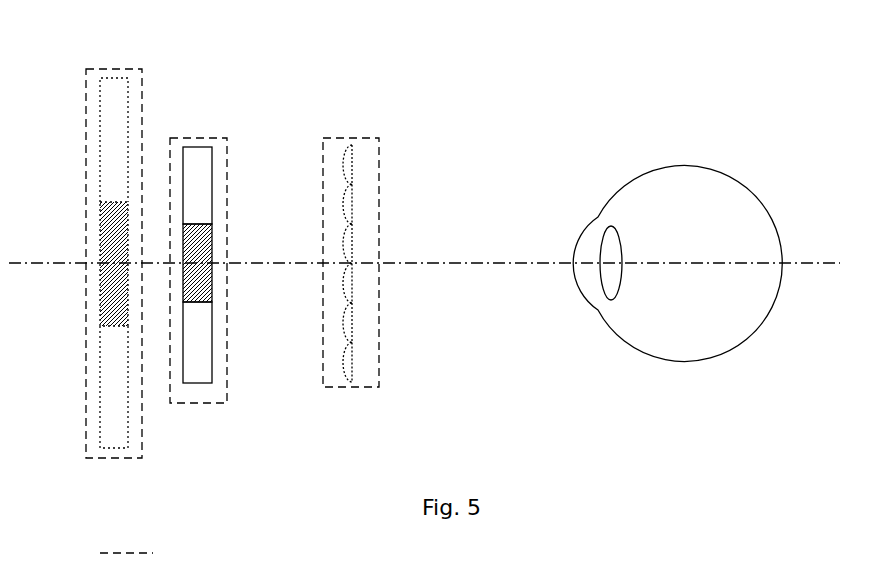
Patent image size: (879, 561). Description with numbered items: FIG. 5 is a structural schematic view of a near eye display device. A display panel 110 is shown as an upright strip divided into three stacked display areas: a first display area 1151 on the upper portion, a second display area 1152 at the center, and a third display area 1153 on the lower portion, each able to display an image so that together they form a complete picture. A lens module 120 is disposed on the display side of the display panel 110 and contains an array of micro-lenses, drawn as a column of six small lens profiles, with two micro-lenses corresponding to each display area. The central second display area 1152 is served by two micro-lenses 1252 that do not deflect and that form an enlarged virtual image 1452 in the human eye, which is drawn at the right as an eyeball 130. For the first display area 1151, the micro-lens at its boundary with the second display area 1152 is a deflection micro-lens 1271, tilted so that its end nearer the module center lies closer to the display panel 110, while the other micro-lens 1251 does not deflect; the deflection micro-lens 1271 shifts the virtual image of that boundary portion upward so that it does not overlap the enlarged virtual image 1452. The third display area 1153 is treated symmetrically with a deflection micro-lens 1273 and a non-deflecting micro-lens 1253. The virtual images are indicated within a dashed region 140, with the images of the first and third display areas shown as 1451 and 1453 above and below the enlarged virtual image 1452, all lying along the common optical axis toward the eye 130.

The liquid crystal lens unit 140 is at (142, 69).
The first region of liquid crystal lens 1451 is at (107, 115).
The enlarged virtual image of the second display area 1452 is at (107, 240).
The third region of liquid crystal lens 1453 is at (108, 403).
The display panel 110 is at (212, 138).
The first display area 1151 is at (198, 192).
The second display area 1152 is at (198, 281).
The third display area 1153 is at (204, 353).
The lens module 120 is at (367, 138).
The micro-lens 1251 is at (350, 170).
The deflection micro-lens 1271 is at (350, 208).
The micro-lenses 1252 is at (350, 242).
The fourth lens 1273 is at (350, 325).
The fifth lens 1253 is at (350, 365).
The human eye 130 is at (670, 182).